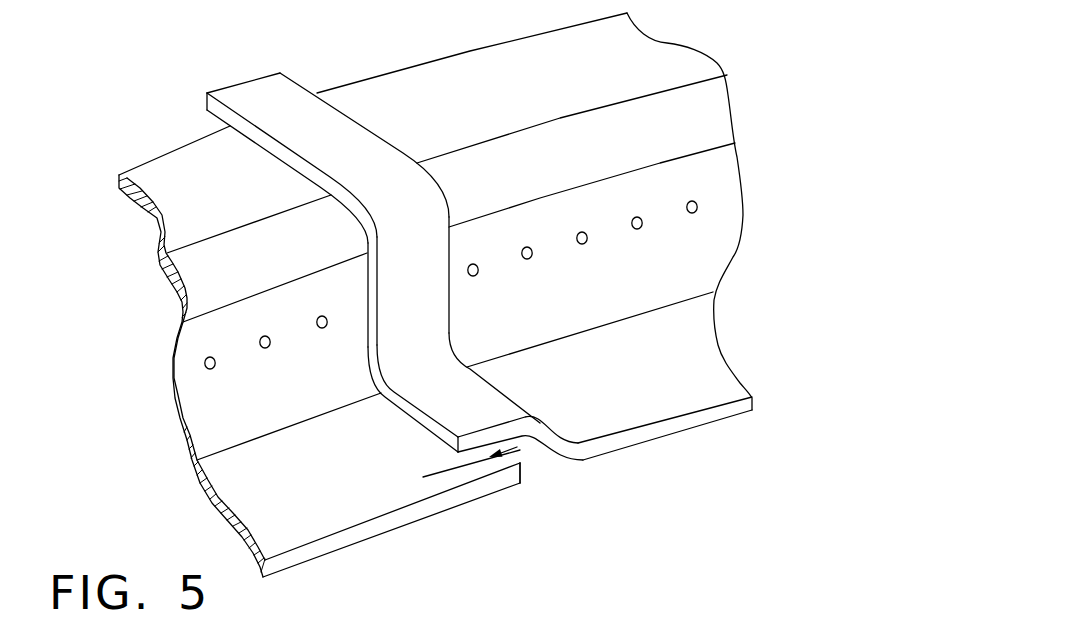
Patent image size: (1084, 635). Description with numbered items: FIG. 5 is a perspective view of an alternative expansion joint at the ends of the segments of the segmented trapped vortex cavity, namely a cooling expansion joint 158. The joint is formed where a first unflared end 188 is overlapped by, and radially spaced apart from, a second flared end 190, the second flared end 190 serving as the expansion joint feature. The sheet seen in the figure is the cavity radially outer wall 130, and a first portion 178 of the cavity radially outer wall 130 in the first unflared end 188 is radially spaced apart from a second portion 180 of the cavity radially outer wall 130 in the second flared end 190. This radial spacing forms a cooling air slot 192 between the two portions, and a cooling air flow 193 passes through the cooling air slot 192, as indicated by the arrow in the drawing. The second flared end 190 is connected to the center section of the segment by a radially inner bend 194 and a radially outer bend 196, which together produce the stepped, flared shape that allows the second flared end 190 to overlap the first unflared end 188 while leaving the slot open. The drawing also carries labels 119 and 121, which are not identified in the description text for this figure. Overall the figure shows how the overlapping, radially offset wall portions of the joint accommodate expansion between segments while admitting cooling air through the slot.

The cavity radially outer wall 130 is at (449, 290).
The first portion 178 is at (246, 137).
The second portion 180 is at (287, 97).
The cooling expansion joint 158 is at (397, 244).
The web of clip 121 is at (375, 350).
The second flared end 190 is at (478, 417).
The radially outer bend 196 is at (537, 428).
The cooling air flow 193 is at (443, 470).
The cooling air slot 192 is at (488, 466).
The first unflared end 188 is at (500, 454).
The lower edge 119 is at (522, 470).
The radially inner bend 194 is at (575, 462).